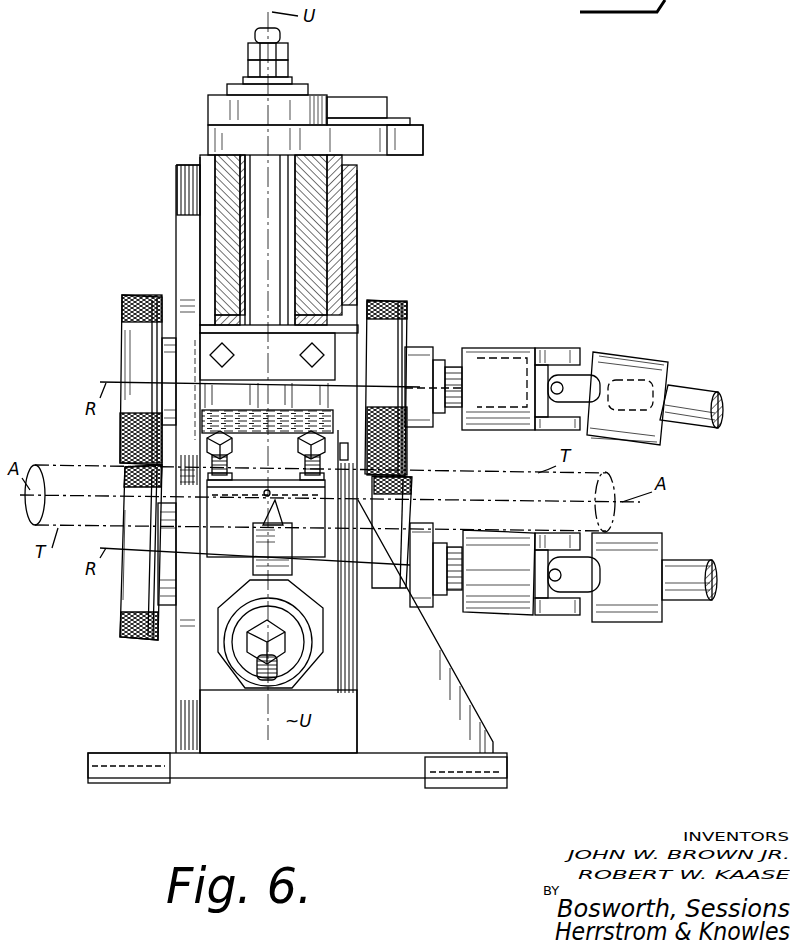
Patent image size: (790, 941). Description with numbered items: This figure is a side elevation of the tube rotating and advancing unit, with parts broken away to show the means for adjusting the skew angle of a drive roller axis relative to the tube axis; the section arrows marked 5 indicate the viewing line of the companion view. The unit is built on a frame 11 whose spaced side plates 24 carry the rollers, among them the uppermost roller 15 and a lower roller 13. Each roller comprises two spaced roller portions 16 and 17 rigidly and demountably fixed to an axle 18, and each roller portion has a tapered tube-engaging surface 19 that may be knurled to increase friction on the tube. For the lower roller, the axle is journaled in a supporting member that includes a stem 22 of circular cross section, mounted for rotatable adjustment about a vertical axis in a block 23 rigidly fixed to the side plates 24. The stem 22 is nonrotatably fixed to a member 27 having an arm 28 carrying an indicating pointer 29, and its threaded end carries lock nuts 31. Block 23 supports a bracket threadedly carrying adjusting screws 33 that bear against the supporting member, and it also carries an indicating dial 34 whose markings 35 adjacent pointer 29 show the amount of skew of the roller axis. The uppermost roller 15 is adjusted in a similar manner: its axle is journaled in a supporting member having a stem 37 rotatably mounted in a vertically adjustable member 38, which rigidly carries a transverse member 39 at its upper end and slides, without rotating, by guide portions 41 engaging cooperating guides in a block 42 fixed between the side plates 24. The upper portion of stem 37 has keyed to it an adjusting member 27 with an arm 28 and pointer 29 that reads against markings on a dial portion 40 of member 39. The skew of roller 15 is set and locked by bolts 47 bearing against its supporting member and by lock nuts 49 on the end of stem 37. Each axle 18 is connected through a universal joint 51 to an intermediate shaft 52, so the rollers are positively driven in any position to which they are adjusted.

The section line 5- 5 is at (100, 805).
The frame 11 is at (478, 724).
The lower roller 13 is at (122, 613).
The uppermost roller 15 is at (146, 296).
The roller portion 16 is at (135, 325).
The roller portion 17 is at (410, 312).
The axle 18 is at (445, 360).
The tube-engaging surface 19 is at (130, 440).
The stem 22 is at (282, 672).
The block 23 is at (210, 682).
The side plates 24 is at (214, 200).
The adjusting member 27 is at (318, 97).
The arm 28 is at (358, 97).
The indicating pointer 29 is at (400, 120).
The lock nuts 31 is at (288, 645).
The adjusting screws 33 is at (230, 445).
The indicating dial 34 is at (242, 562).
The markings 35 is at (287, 537).
The stem 37 is at (247, 228).
The vertically adjustable member 38 is at (315, 190).
The transverse member 39 is at (212, 133).
The dial portion 40 is at (418, 128).
The guide portions 41 is at (200, 157).
The block 42 is at (205, 175).
The bolts 47 is at (300, 355).
The lock nuts 49 is at (245, 60).
The universal joint 51 is at (490, 350).
The intermediate shaft 52 is at (680, 388).